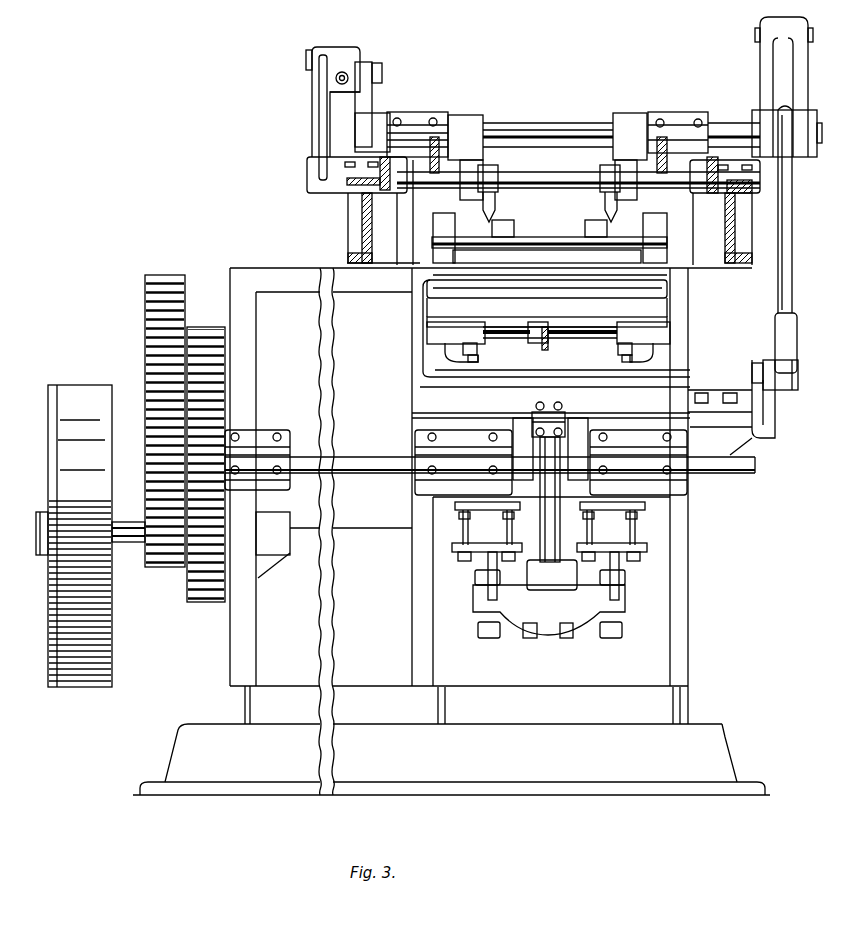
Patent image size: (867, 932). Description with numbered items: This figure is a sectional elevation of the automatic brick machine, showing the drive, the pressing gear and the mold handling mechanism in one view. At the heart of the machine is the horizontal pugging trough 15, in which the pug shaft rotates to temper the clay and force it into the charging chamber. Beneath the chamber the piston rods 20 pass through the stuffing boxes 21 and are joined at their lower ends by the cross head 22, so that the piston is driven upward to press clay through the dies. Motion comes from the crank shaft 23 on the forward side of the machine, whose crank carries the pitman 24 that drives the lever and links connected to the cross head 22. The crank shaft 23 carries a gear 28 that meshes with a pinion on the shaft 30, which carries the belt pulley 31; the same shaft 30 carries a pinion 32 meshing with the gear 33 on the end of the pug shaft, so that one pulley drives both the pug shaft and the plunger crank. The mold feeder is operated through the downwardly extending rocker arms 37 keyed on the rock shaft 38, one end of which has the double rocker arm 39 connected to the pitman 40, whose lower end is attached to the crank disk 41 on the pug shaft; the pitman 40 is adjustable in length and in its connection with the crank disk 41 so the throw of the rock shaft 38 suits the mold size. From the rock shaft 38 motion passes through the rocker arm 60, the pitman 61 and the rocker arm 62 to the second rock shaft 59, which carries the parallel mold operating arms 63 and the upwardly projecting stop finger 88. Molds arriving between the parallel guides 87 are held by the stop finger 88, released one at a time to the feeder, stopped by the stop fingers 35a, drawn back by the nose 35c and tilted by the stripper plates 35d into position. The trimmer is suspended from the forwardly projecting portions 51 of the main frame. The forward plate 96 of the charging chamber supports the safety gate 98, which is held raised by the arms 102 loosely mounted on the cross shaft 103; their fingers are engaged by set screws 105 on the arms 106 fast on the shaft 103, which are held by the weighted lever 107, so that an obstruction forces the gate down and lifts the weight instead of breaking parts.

The pugging trough 15 is at (451, 531).
The piston rods 20 is at (485, 557).
The stuffing boxes 21 is at (495, 507).
The cross head 22 is at (538, 610).
The crank shaft 23 is at (388, 442).
The pitman 24 is at (552, 475).
The gear 28 is at (225, 398).
The shaft 30 is at (130, 545).
The belt pulley 31 is at (97, 678).
The pinion 32 is at (168, 552).
The gear 33 is at (145, 420).
The stop fingers 35a is at (593, 227).
The nose 35c is at (548, 258).
The stripper plates 35d is at (672, 230).
The rocker arms 37 is at (453, 128).
The rock shaft 38 is at (520, 130).
The double rocker arm 39 is at (800, 75).
The pitman 40 is at (787, 217).
The crank disk 41 is at (767, 400).
The forwardly projecting portions 51 is at (362, 212).
The second rock shaft 59 is at (540, 175).
The rocker arm 60 is at (362, 107).
The pitman 61 is at (355, 62).
The rocker arm 62 is at (320, 88).
The mold operating arms 63 is at (393, 193).
The parallel guides 87 is at (475, 128).
The stop finger 88 is at (495, 190).
The forward plate 96 is at (650, 365).
The safety gate 98 is at (637, 277).
The arms 102 is at (470, 323).
The cross shaft 103 is at (507, 327).
The set screws 105 is at (470, 352).
The arms 106 is at (453, 343).
The weighted lever 107 is at (540, 350).